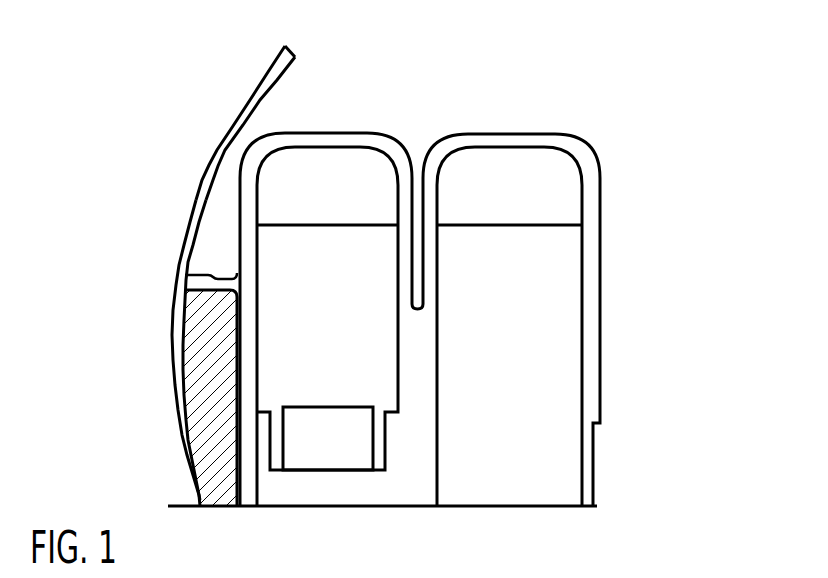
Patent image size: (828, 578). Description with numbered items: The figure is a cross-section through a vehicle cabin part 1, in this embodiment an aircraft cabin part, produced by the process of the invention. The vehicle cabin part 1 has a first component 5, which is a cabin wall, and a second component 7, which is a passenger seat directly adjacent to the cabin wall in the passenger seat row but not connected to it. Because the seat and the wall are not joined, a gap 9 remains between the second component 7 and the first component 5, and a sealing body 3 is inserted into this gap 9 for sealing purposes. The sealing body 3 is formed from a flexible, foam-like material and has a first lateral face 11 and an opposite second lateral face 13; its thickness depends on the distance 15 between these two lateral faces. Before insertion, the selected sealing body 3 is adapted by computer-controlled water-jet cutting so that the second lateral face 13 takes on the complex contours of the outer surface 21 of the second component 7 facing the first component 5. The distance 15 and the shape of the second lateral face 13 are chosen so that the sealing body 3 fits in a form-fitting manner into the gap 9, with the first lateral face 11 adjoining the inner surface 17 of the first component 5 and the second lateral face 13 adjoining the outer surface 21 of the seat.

The vehicle cabin part 1 is at (683, 99).
The sealing body 3 is at (204, 356).
The first component 5 is at (233, 276).
The second component 7 is at (316, 329).
The gap 9 is at (211, 232).
The first lateral face 11 is at (167, 390).
The second lateral face 13 is at (225, 413).
The distance 15 is at (208, 275).
The inner surface 17 is at (257, 106).
The outer surface 21 is at (238, 233).